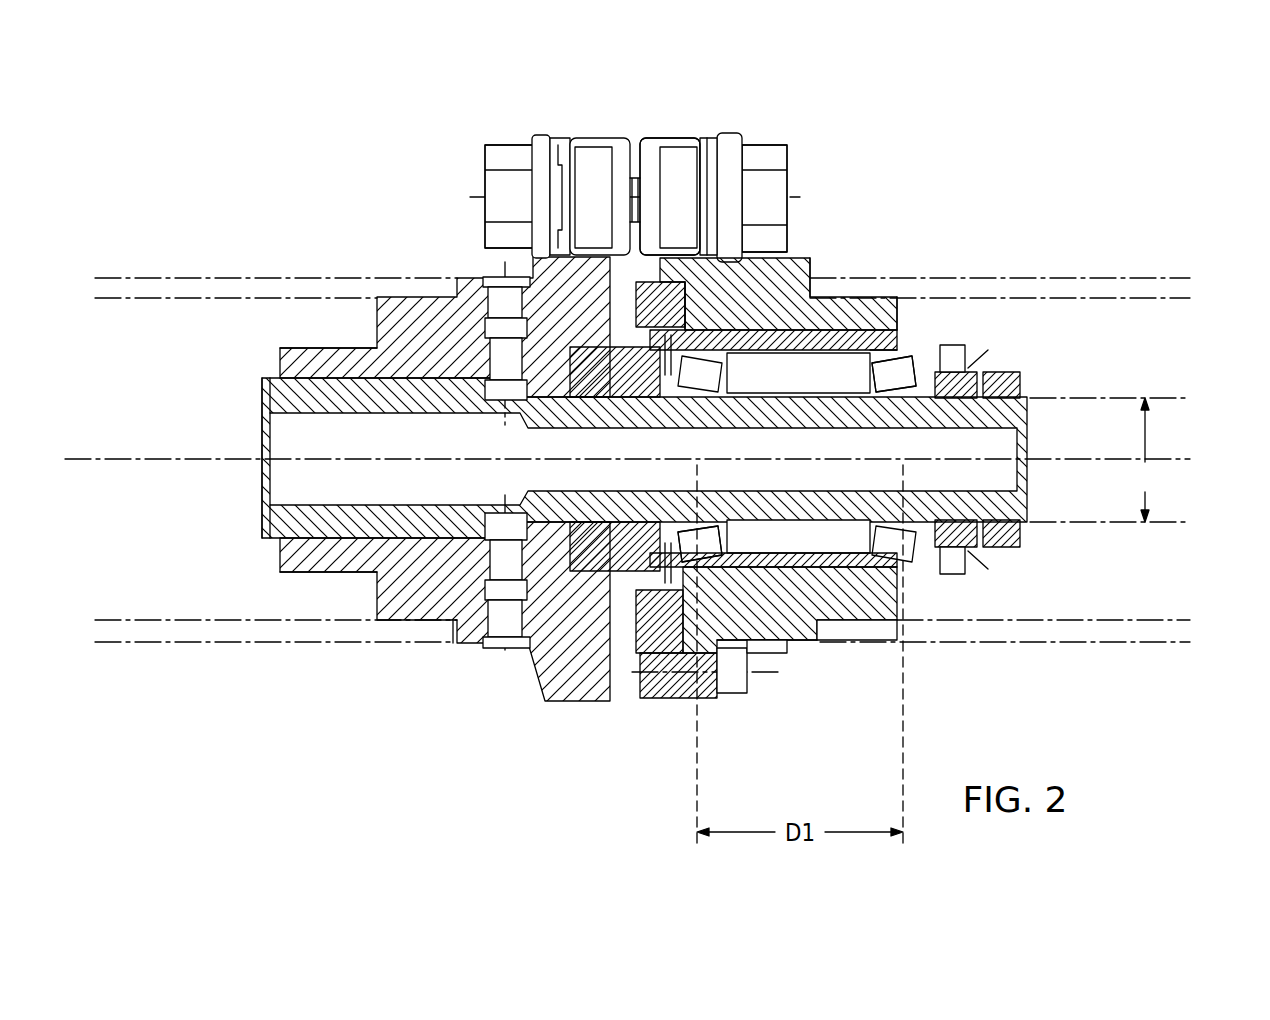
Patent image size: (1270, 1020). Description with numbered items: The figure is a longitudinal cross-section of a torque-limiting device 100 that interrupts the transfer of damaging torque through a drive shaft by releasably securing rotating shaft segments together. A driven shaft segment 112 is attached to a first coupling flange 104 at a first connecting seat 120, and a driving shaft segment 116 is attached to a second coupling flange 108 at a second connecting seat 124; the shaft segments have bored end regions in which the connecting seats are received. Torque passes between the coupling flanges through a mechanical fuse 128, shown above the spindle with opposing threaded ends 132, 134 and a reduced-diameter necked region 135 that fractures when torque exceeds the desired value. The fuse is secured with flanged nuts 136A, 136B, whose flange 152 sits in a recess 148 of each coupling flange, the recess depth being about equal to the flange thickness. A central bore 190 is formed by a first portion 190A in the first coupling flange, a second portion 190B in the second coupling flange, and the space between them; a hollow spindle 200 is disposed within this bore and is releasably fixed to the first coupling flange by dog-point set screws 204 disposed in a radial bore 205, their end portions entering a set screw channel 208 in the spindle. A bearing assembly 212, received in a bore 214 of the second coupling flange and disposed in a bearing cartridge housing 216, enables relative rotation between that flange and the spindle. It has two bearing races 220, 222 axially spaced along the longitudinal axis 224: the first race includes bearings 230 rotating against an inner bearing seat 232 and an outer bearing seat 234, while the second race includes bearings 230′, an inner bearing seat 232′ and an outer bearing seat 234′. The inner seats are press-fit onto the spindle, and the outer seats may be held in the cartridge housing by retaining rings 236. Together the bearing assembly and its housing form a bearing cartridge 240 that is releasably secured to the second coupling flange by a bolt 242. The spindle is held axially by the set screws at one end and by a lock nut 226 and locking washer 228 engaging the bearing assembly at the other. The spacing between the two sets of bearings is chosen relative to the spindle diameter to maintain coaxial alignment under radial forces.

The torque-limiting device 100 is at (951, 123).
The first coupling flange 104 is at (545, 702).
The second coupling flange 108 is at (797, 642).
The driven shaft segment 112 is at (243, 615).
The driving shaft segment 116 is at (920, 610).
The first connecting seat 120 is at (457, 628).
The second connecting seat 124 is at (862, 625).
The mechanical fuse 128 is at (593, 128).
The threaded end 132 is at (563, 138).
The threaded end 134 is at (708, 138).
The necked region 135 is at (636, 150).
The flanged nut 136A is at (485, 160).
The flanged nut 136B is at (787, 160).
The recess 148 is at (760, 197).
The flange 152 is at (540, 135).
The central bore 190 is at (262, 395).
The first portion of central bore 190A is at (375, 365).
The second portion of central bore 190B is at (865, 302).
The spindle 200 is at (1028, 410).
The dog-point set screw 204 is at (500, 277).
The radial bore 205 is at (486, 376).
The set screw channel 208 is at (478, 360).
The bearing assembly 212 is at (880, 340).
The bore 214 is at (833, 342).
The bearing cartridge housing 216 is at (985, 372).
The bearing race 220 is at (708, 345).
The bearing race 222 is at (915, 345).
The longitudinal axis 224 is at (1185, 485).
The lock nut 226 is at (985, 385).
The locking washer 228 is at (985, 370).
The bearings 230 is at (642, 560).
The inner bearing seat 232 is at (650, 540).
The outer bearing seat 234 is at (690, 555).
The bearings 230′ is at (945, 390).
The inner bearing seat 232′ is at (905, 380).
The outer bearing seat 234′ is at (900, 360).
The retaining ring 236 is at (666, 333).
The bearing cartridge 240 is at (958, 612).
The bolt 242 is at (750, 655).